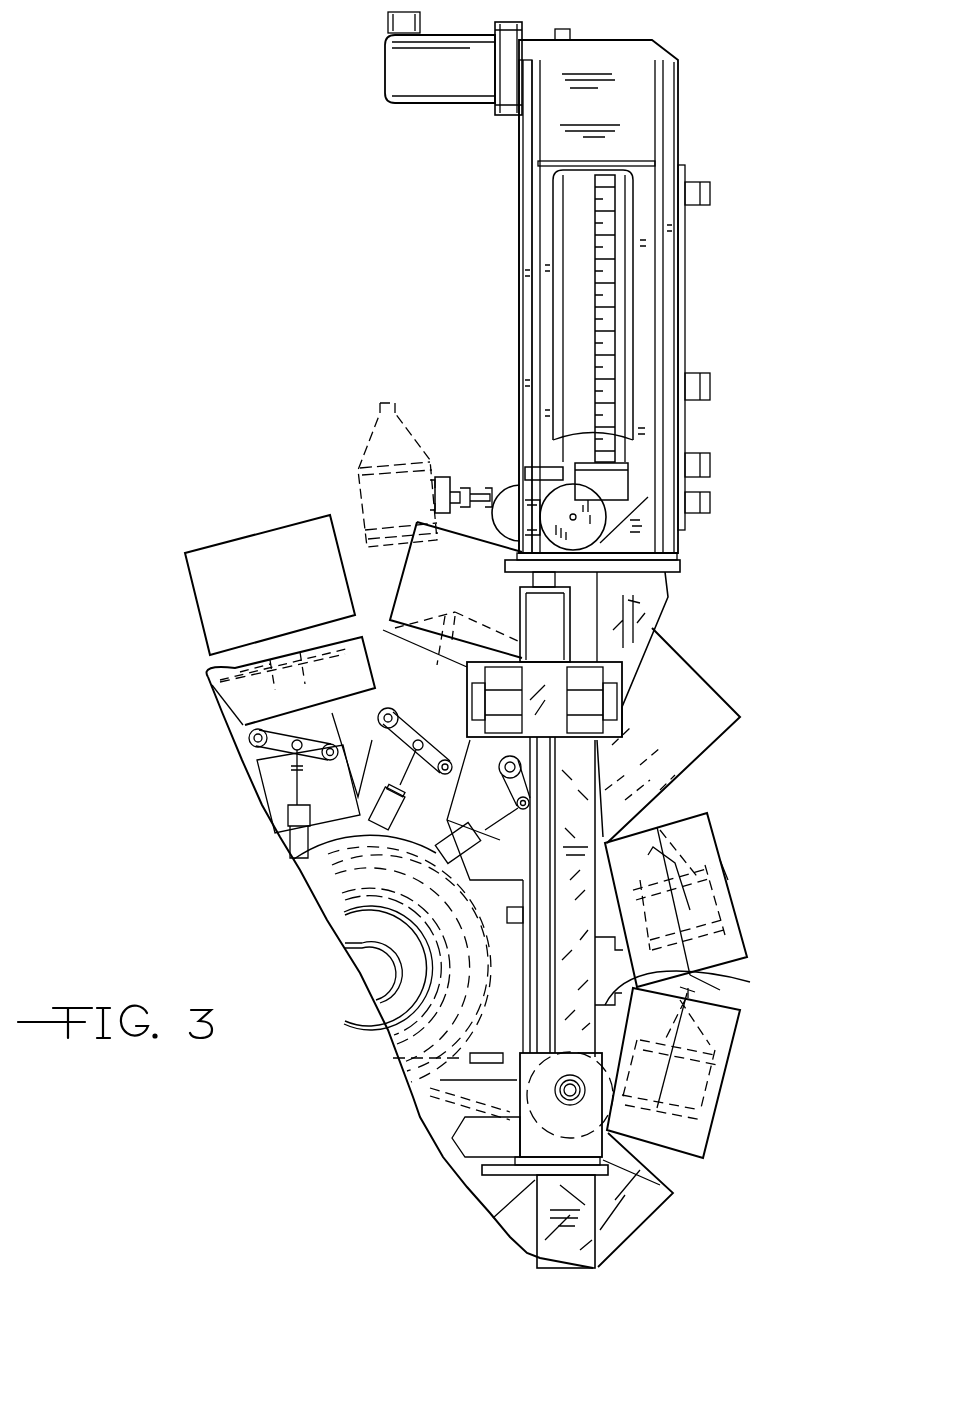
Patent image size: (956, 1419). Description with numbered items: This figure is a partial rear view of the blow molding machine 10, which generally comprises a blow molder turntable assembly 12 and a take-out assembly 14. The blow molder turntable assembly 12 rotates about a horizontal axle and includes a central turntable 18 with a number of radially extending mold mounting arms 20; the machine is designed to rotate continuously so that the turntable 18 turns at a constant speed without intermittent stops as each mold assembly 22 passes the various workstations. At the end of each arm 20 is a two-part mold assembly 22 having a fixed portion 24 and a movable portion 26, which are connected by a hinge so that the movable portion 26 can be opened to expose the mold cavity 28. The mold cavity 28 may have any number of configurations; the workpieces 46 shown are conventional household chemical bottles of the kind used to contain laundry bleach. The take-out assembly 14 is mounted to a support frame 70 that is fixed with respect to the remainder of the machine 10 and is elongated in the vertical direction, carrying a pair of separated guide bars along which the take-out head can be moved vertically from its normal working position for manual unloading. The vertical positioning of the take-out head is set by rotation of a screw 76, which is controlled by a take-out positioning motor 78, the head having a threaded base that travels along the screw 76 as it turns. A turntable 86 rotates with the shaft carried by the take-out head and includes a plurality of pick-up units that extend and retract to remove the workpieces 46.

The blow molding machine 10 is at (723, 621).
The blow molder turntable assembly 12 is at (680, 795).
The take-out assembly 14 is at (694, 311).
The central turntable 18 is at (723, 990).
The mold mounting arms 20 is at (750, 982).
The mold assembly 22 is at (730, 858).
The fixed portion 24 is at (235, 670).
The movable portion 26 is at (730, 1060).
The mold cavity 28 is at (740, 911).
The workpieces 46 is at (372, 432).
The support frame 70 is at (519, 228).
The screw 76 is at (595, 303).
The take-out positioning motor 78 is at (462, 81).
The turntable 86 is at (510, 470).